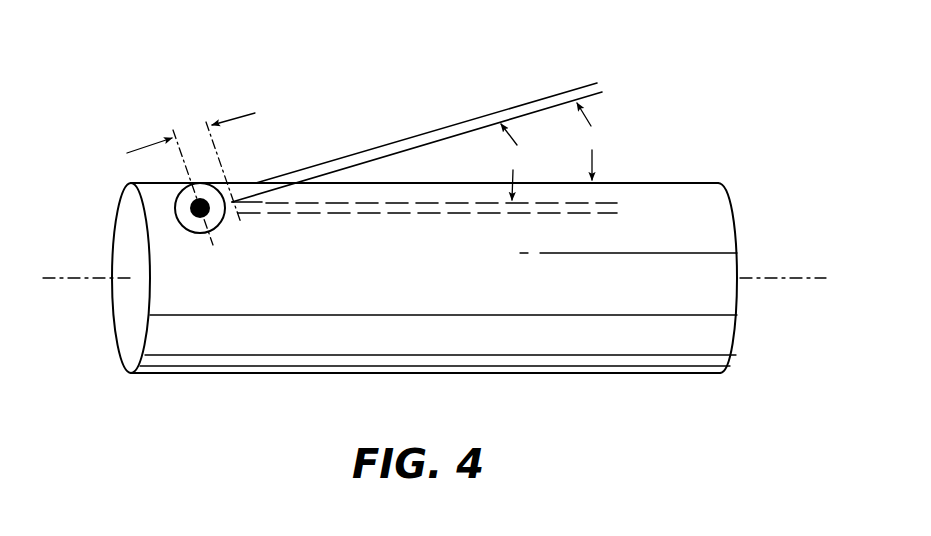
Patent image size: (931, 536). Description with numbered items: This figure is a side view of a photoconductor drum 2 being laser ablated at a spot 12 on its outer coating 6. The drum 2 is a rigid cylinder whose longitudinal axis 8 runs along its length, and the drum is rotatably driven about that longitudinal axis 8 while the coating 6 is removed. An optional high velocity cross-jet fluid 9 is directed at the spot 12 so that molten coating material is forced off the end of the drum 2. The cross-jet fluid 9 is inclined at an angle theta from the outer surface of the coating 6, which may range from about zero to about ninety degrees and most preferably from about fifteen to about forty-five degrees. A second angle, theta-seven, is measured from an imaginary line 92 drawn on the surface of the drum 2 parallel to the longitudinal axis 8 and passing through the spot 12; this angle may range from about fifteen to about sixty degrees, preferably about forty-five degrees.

The photoconductor drum 2 is at (271, 46).
The outer coating 6 is at (147, 362).
The longitudinal axis 8 is at (74, 280).
The cross-jet fluid 9 is at (420, 139).
The spot 12 is at (195, 233).
The imaginary line 92 is at (434, 215).